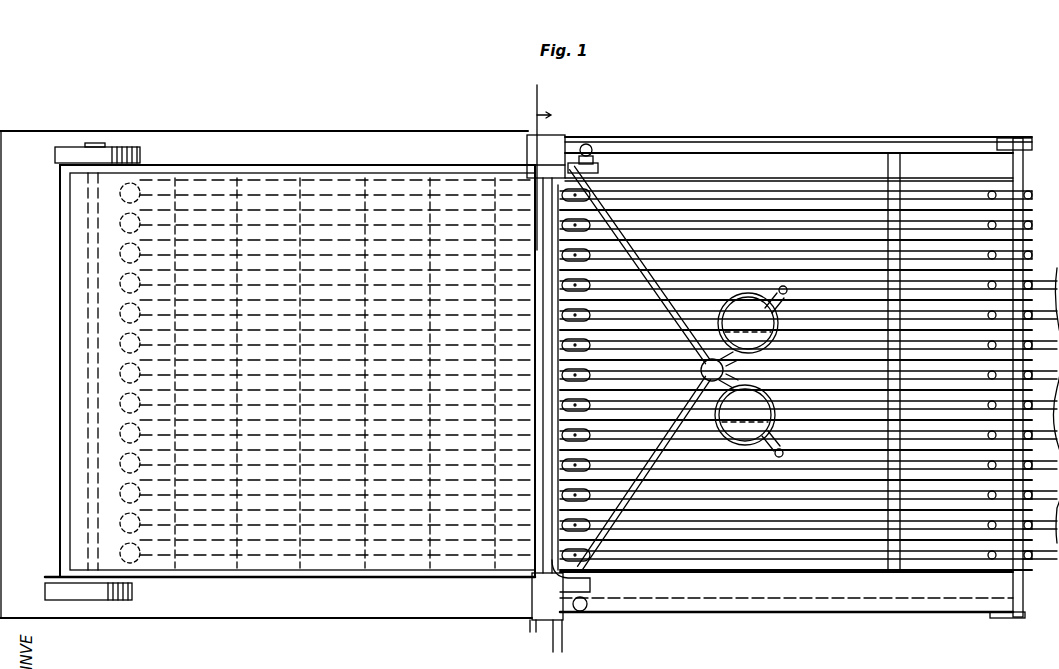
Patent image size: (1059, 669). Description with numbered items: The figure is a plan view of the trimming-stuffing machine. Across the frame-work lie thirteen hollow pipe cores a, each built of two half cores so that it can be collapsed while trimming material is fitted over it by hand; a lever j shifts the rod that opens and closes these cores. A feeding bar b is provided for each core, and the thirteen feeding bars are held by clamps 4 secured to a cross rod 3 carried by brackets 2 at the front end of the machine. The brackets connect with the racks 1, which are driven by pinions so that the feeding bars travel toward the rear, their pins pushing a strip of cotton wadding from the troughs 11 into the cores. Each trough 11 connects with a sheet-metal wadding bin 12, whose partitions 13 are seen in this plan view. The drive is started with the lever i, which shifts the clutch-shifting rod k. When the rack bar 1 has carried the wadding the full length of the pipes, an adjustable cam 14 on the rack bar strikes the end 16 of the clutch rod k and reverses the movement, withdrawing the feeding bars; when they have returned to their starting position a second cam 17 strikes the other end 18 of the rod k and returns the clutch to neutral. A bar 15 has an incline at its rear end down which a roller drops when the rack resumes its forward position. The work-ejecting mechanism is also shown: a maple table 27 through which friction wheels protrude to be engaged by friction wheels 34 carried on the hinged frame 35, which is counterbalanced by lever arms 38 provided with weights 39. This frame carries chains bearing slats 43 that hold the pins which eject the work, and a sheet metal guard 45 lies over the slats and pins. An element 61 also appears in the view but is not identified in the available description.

The rack 1 is at (855, 146).
The brackets 2 is at (1010, 640).
The cross rod 3 is at (1021, 368).
The clamps 4 is at (1022, 196).
The troughs 11 is at (788, 205).
The partitioned wadding bin 12 is at (950, 570).
The partitions 13 is at (1044, 212).
The cam 14 is at (928, 146).
The bar 15 is at (906, 146).
The end of clutch-shifting rod 16 is at (592, 148).
The cam 17 is at (582, 612).
The end of clutch-shifting rod 18 is at (597, 596).
The table 27 is at (237, 128).
The friction wheels 34 is at (60, 160).
The frame 35 is at (58, 343).
The lever arms 38 is at (660, 292).
The weights 39 is at (751, 371).
The slats 43 is at (425, 520).
The sheet metal guard 45 is at (330, 178).
The header block 61 is at (593, 185).
The hollow pipe cores a is at (210, 572).
The feeding bar b is at (830, 196).
The lever i is at (521, 630).
The lever j is at (563, 648).
The clutch-shifting rod k is at (600, 586).